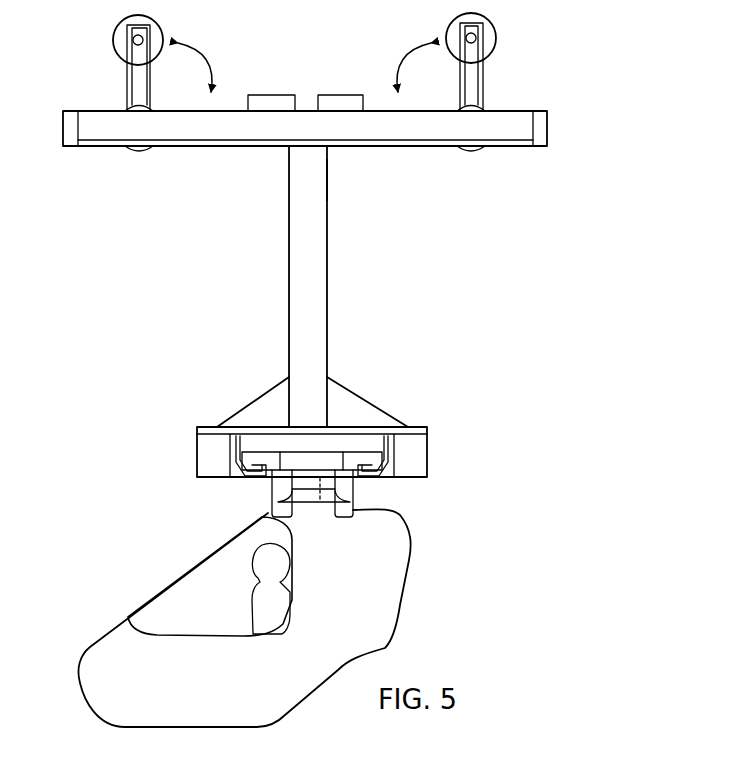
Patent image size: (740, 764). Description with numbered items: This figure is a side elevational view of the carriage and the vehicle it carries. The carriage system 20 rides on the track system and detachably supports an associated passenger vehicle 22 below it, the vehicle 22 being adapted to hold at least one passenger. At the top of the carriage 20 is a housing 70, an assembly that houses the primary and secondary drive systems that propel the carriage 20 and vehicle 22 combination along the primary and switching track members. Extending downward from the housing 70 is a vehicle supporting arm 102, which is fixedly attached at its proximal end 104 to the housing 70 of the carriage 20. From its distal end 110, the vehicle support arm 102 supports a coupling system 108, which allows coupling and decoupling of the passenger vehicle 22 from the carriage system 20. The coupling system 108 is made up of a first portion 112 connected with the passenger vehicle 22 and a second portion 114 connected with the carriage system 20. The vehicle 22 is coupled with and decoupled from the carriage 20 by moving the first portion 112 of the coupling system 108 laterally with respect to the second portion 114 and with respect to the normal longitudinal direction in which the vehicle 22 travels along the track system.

The carriage system 20 is at (541, 102).
The housing 70 is at (492, 152).
The vehicle supporting arm 102 is at (334, 242).
The proximal end 104 is at (328, 173).
The distal end 110 is at (289, 398).
The second portion 114 is at (366, 391).
The coupling system 108 is at (434, 439).
The first portion 112 is at (264, 497).
The passenger vehicle 22 is at (112, 606).